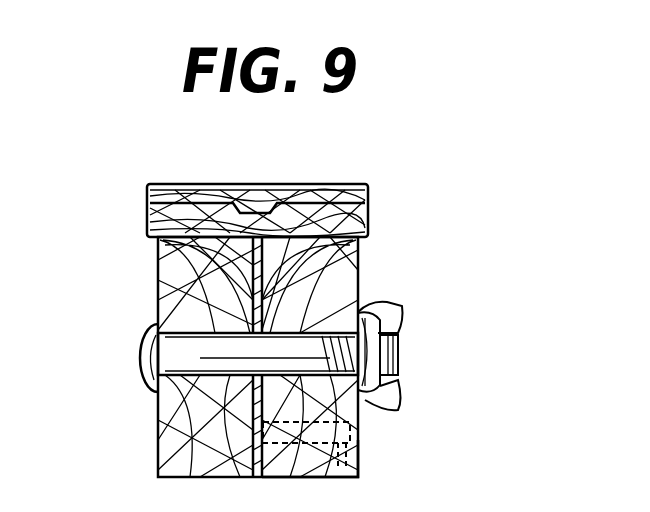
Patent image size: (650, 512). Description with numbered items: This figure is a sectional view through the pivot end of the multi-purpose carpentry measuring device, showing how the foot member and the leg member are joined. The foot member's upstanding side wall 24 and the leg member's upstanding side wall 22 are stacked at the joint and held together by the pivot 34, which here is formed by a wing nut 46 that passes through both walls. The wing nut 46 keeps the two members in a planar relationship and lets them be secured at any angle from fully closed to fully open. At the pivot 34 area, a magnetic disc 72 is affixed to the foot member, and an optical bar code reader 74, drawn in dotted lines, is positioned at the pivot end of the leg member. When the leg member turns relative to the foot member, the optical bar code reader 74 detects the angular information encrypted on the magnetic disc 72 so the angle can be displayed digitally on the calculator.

The upstanding side wall 22 is at (358, 452).
The upstanding side wall 24 is at (158, 453).
The pivot 34 is at (140, 353).
The wing nut 46 is at (387, 305).
The magnetic disc 72 is at (263, 288).
The optical bar code reader 74 is at (365, 428).